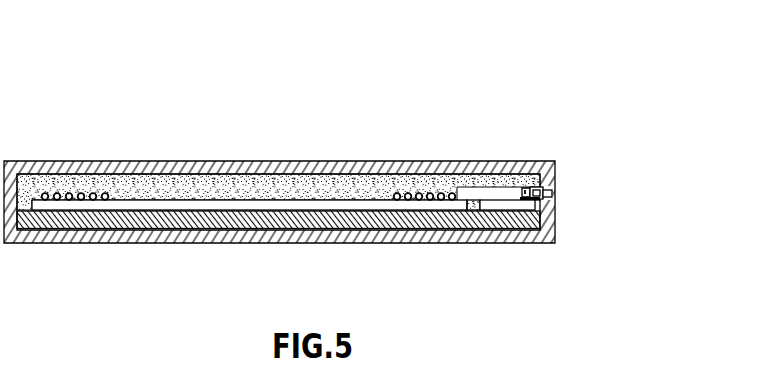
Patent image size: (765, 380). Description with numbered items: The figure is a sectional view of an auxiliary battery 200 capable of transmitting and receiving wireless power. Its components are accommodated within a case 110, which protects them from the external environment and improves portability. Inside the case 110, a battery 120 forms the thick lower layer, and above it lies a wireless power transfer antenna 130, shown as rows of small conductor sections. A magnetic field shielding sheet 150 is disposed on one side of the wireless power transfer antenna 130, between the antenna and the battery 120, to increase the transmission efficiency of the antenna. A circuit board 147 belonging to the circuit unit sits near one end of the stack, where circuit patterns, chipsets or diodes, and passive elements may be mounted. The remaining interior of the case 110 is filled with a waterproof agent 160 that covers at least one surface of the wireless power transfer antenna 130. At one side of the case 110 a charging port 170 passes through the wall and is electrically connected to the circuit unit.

The auxiliary battery 200 is at (161, 107).
The case 110 is at (548, 229).
The battery 120 is at (418, 215).
The wireless power transfer antenna 130 is at (407, 190).
The circuit board 147 is at (507, 205).
The magnetic field shielding sheet 150 is at (262, 203).
The waterproof agent 160 is at (295, 178).
The charging port 170 is at (552, 191).